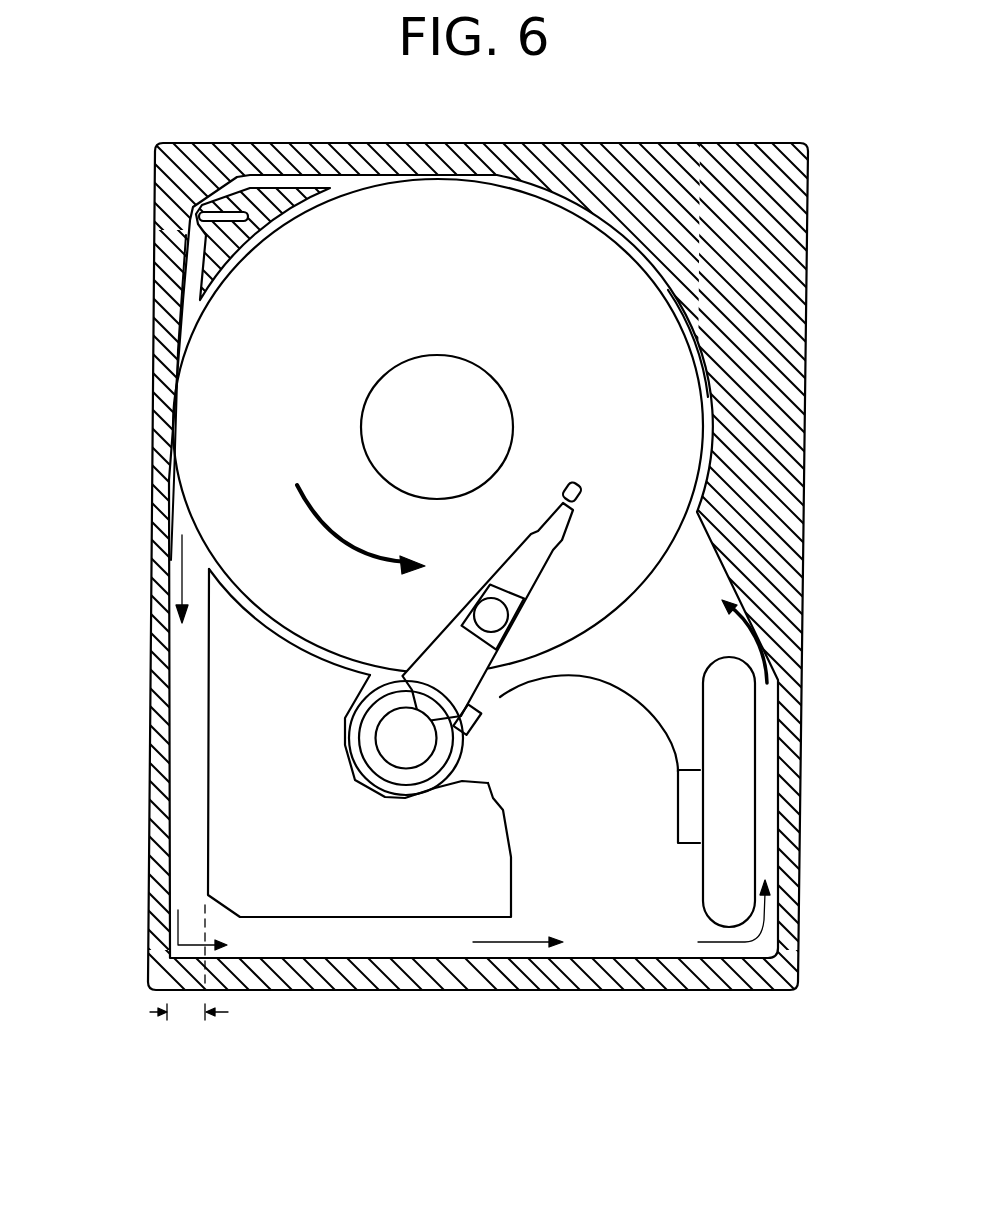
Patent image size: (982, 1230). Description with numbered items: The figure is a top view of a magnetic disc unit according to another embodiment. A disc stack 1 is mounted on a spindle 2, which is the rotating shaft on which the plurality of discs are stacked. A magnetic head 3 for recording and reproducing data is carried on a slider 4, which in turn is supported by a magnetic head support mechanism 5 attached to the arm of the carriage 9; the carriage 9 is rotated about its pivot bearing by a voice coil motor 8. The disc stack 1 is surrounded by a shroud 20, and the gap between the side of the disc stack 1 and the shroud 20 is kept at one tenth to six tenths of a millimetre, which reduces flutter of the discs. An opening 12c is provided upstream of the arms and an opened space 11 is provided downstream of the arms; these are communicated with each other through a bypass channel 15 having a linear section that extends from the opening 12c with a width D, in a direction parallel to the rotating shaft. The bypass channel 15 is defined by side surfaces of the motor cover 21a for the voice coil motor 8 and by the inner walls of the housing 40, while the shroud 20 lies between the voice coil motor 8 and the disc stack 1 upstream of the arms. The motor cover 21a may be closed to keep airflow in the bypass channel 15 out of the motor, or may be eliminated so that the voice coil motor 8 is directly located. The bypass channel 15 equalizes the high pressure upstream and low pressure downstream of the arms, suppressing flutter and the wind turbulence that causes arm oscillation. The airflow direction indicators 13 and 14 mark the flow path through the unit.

The disc 1 is at (633, 323).
The spindle 2 is at (470, 365).
The magnetic head 3 is at (583, 493).
The slider 4 is at (614, 473).
The magnetic head support mechanism 5 is at (512, 573).
The voice coil motor 8 is at (737, 817).
The carriage 9 is at (418, 743).
The opened space 11 is at (682, 587).
The opening 12c is at (170, 508).
The air flow 13 is at (297, 503).
The bottom air passage 14 is at (503, 943).
The bypass channel 15 is at (175, 863).
The shroud 20 is at (713, 413).
The motor cover 21a is at (207, 770).
The housing 40 is at (150, 975).